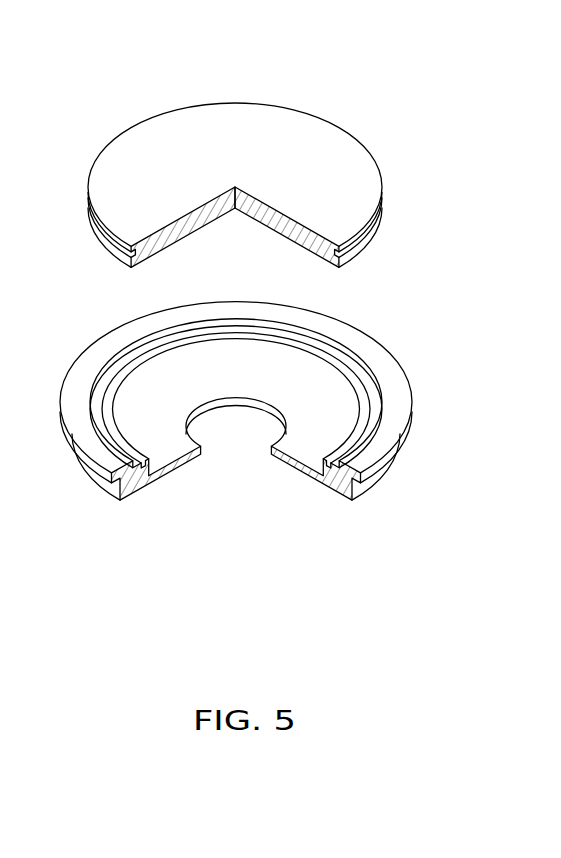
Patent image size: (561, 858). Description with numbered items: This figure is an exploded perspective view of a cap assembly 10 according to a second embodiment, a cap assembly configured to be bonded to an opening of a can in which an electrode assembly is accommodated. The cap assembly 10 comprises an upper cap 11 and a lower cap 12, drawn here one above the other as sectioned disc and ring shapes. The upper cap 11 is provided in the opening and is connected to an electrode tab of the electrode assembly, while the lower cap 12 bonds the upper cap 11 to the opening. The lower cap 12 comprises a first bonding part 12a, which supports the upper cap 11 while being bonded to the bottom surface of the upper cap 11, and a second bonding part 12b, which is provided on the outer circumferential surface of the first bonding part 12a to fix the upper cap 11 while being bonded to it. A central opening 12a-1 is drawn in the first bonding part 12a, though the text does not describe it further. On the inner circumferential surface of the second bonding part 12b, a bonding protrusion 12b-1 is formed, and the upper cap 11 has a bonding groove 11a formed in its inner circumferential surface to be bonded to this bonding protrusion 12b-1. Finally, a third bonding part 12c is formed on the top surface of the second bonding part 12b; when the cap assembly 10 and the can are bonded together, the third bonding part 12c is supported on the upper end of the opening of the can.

The cap assembly 10 is at (93, 70).
The upper cap 11 is at (363, 165).
The bonding groove 11a is at (365, 237).
The lower cap 12 is at (405, 572).
The first bonding part 12a is at (319, 487).
The through hole 12a-1 is at (281, 409).
The second bonding part 12b is at (345, 494).
The bonding protrusion 12b-1 is at (323, 466).
The third bonding part 12c is at (359, 486).